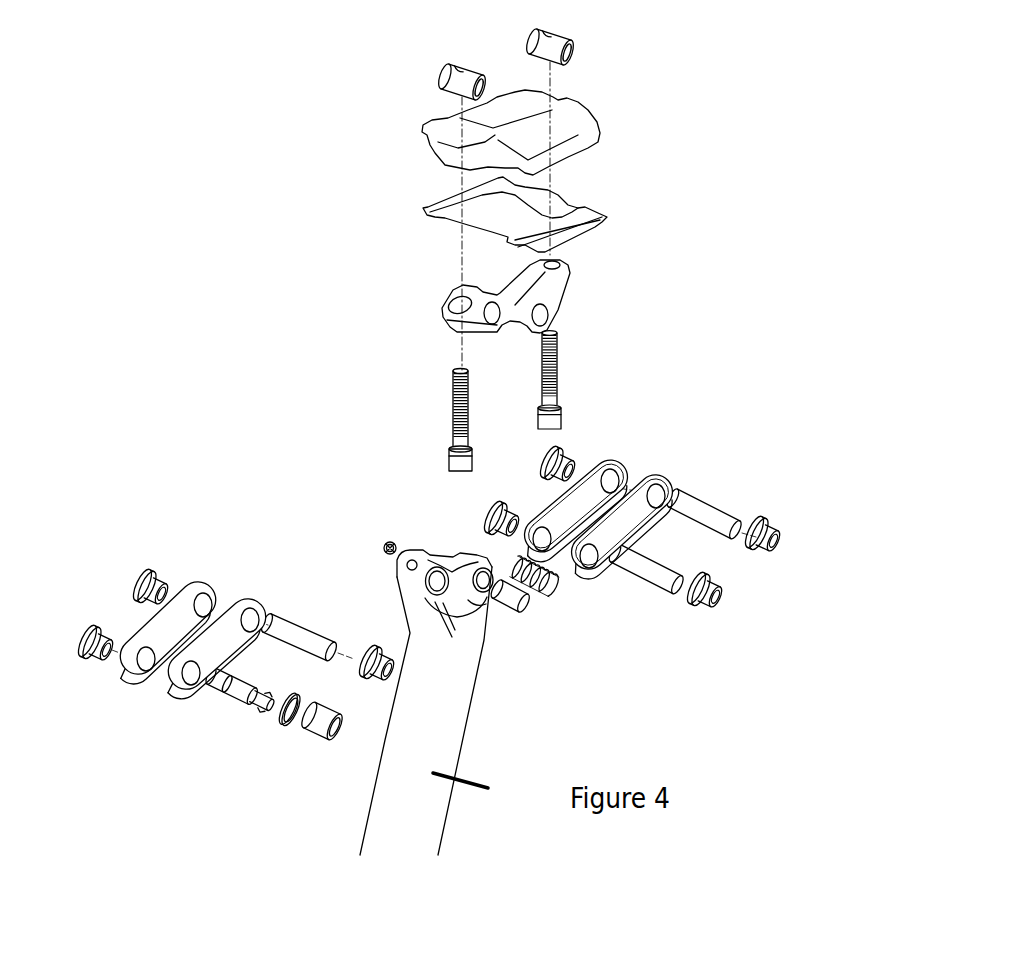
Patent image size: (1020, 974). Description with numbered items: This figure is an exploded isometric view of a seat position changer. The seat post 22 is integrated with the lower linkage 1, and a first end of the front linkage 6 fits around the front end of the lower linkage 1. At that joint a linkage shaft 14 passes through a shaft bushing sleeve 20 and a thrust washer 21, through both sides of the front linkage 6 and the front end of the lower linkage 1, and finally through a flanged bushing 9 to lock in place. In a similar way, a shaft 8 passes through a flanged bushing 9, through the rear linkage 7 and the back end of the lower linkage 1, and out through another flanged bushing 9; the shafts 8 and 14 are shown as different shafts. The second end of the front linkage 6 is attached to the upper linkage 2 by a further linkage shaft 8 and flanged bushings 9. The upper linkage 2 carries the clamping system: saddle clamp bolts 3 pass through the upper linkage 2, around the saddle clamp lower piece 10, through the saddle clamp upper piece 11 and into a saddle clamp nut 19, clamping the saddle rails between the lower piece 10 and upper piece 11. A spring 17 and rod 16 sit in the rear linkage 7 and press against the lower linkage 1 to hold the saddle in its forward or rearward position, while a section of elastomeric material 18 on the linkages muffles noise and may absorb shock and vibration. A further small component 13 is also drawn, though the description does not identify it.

The lower linkage 1 is at (448, 705).
The upper linkage 2 is at (552, 292).
The saddle clamp bolts 3 is at (462, 445).
The front linkage 6 is at (195, 585).
The rear linkage 7 is at (644, 475).
The linkage shaft 8 is at (647, 572).
The flanged bushing 9 is at (143, 573).
The saddle clamp lower piece 10 is at (446, 221).
The saddle clamp upper piece 11 is at (563, 125).
The set screw 13 is at (386, 544).
The linkage shaft 14 is at (247, 693).
The rod 16 is at (512, 600).
The spring 17 is at (538, 585).
The elastomeric material 18 is at (590, 468).
The saddle clamp nut 19 is at (457, 83).
The shaft bushing sleeve 20 is at (316, 723).
The thrust washer 21 is at (280, 722).
The seat post 22 is at (480, 793).